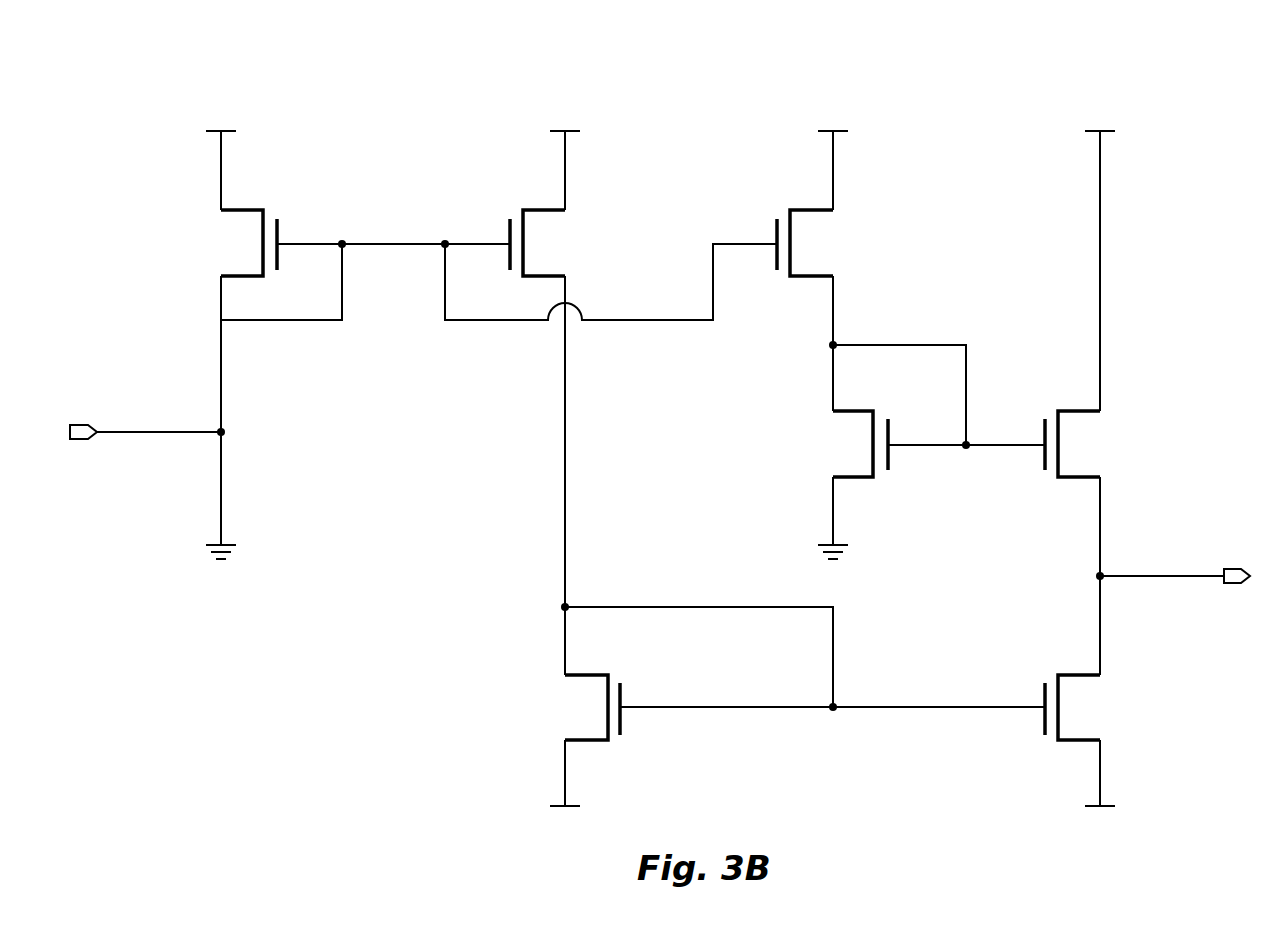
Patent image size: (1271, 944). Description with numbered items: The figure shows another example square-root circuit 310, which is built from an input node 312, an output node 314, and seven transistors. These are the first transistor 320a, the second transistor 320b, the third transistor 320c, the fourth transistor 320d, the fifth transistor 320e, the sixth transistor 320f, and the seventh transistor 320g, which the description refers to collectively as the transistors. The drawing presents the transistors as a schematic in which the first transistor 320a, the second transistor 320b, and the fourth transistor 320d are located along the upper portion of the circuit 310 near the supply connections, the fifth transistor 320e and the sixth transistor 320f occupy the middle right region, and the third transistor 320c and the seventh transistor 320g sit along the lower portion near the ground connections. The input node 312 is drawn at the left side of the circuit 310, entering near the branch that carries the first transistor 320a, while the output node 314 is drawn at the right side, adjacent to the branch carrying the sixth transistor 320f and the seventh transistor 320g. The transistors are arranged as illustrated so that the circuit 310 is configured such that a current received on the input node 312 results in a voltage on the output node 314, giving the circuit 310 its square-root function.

The square-root circuit 310 is at (150, 70).
The input node 312 is at (126, 432).
The output node 314 is at (1155, 576).
The first transistor 320a is at (250, 210).
The second transistor 320b is at (545, 210).
The third transistor 320c is at (588, 741).
The fourth transistor 320d is at (811, 210).
The fifth transistor 320e is at (855, 478).
The sixth transistor 320f is at (1077, 478).
The seventh transistor 320g is at (1077, 741).